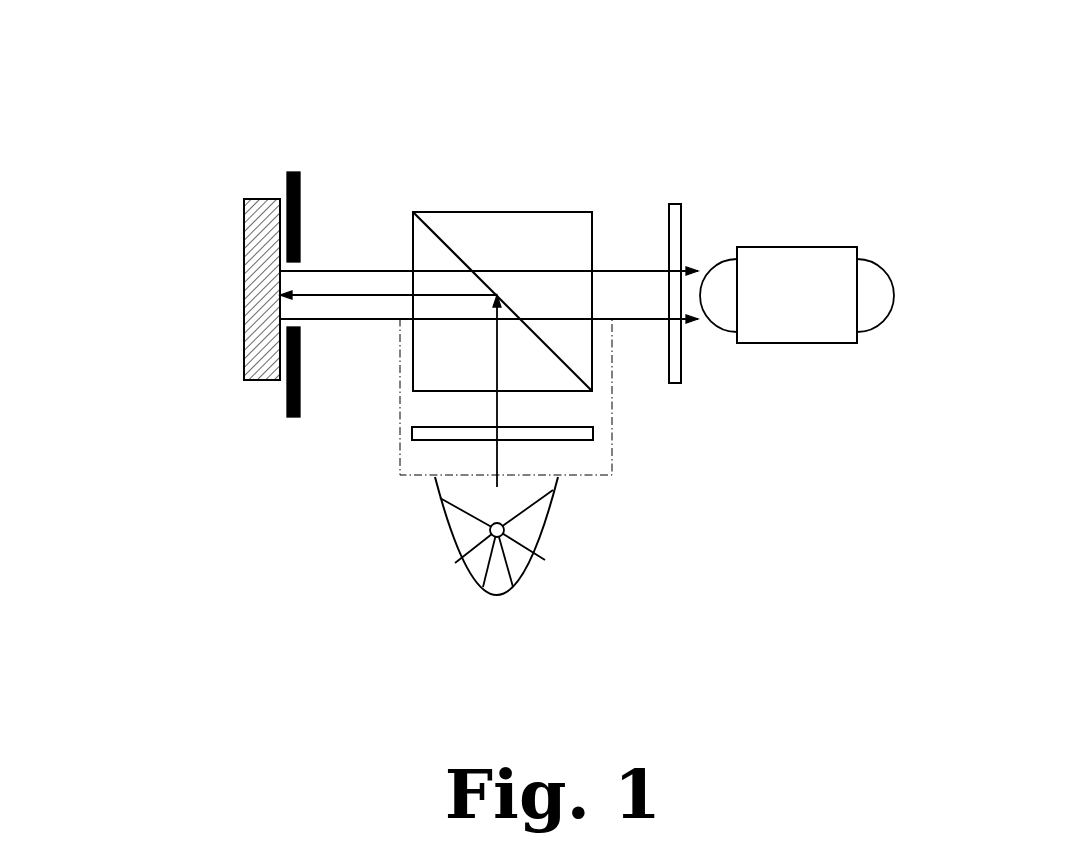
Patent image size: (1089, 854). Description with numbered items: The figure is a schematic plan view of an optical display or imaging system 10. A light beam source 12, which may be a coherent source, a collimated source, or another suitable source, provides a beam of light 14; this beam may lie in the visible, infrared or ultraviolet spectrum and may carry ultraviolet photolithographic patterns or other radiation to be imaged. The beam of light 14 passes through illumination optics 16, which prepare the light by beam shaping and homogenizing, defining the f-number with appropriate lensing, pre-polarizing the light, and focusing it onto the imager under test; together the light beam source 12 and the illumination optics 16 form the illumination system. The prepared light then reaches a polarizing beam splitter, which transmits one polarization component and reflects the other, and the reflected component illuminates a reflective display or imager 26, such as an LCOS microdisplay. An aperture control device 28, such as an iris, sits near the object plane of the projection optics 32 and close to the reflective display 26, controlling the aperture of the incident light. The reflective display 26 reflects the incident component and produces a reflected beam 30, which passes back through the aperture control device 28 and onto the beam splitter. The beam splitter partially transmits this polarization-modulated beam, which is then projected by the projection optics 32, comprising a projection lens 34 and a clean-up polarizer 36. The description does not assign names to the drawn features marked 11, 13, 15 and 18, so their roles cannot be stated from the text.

The optical display or imaging system 10 is at (918, 150).
The lamp bulb 11 is at (492, 536).
The light beam source 12 is at (570, 537).
The reflector 13 is at (508, 597).
The beam of light 14 is at (497, 452).
The housing 15 is at (352, 212).
The illumination optics 16 is at (450, 246).
The light beam 18 is at (402, 295).
The reflective display or imager 26 is at (228, 289).
The aperture control device 28 is at (292, 162).
The reflected beam 30 is at (363, 271).
The projection optics 32 is at (626, 317).
The projection lens 34 is at (797, 319).
The clean-up polarizer 36 is at (683, 237).